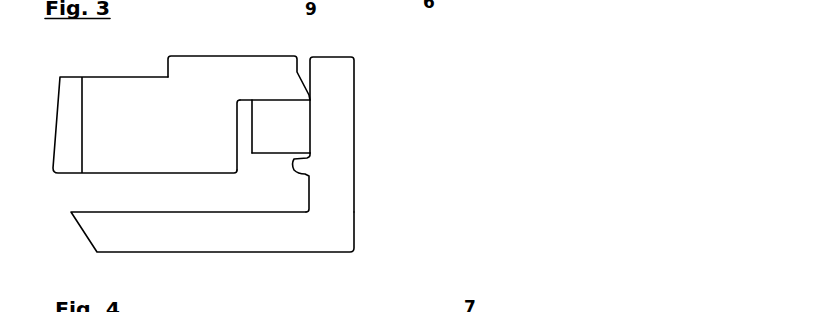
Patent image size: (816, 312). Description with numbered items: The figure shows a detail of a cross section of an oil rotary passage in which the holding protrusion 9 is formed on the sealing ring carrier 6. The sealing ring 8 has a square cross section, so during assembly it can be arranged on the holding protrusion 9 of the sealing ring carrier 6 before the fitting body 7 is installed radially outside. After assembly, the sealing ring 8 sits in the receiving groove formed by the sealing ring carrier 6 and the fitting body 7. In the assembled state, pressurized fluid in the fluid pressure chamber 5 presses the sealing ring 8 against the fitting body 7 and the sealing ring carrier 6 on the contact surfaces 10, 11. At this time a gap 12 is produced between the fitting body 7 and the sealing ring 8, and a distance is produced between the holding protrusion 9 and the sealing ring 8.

The fluid pressure chamber 5 is at (137, 190).
The sealing ring carrier 6 is at (335, 223).
The fitting body 7 is at (280, 71).
The sealing ring 8 is at (293, 142).
The holding protrusion 9 is at (303, 165).
The contact surface 10 is at (302, 98).
The contact surface 11 is at (312, 124).
The gap 12 is at (242, 152).